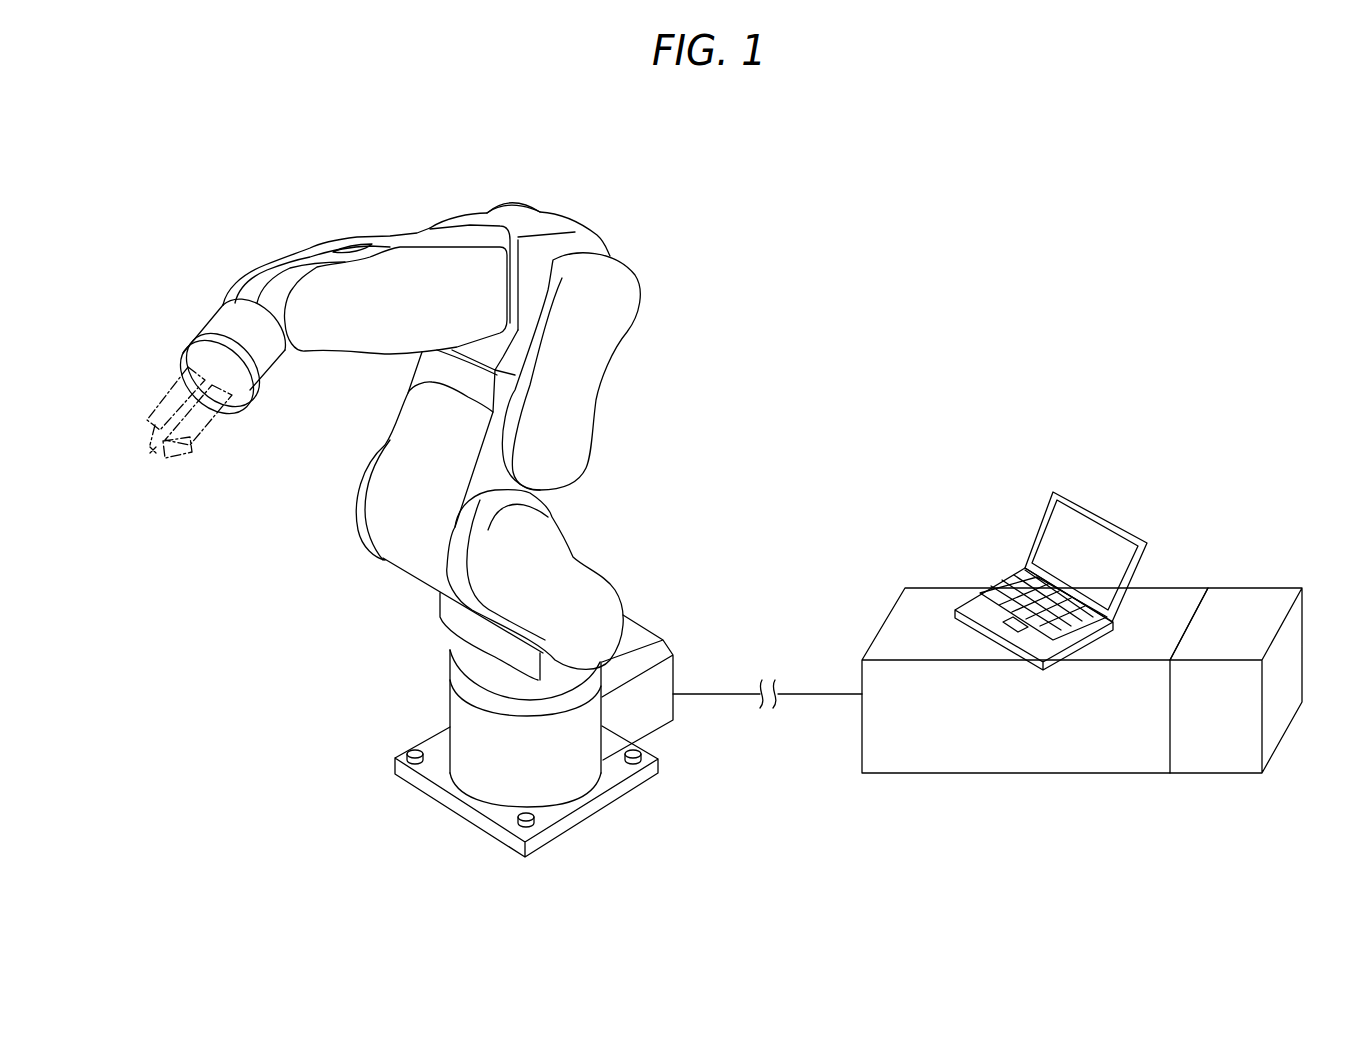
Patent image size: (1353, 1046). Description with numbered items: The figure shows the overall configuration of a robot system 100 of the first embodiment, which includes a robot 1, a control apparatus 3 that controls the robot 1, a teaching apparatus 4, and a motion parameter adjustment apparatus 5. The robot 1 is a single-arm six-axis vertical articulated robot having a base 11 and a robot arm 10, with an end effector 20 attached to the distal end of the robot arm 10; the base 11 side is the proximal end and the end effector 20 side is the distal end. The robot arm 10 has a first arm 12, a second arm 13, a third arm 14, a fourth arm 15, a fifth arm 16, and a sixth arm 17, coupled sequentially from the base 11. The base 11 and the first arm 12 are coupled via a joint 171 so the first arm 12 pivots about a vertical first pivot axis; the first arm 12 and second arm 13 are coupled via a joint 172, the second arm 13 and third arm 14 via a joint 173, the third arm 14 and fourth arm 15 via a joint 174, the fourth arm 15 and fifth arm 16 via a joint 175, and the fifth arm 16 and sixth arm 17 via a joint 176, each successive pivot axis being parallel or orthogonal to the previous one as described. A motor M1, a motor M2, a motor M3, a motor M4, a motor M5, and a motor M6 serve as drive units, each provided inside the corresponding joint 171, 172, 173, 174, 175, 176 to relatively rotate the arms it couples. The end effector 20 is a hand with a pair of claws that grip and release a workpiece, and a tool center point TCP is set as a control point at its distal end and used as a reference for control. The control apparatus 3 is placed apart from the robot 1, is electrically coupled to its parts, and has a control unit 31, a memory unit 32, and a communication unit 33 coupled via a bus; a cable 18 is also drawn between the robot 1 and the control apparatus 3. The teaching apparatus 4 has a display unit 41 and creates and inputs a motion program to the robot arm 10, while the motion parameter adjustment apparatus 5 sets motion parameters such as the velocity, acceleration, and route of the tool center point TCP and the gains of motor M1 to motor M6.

The robot system 100 is at (1226, 195).
The robot 1 is at (712, 194).
The robot arm 10 is at (636, 265).
The base 11 is at (533, 787).
The first arm 12 is at (605, 611).
The second arm 13 is at (584, 430).
The third arm 14 is at (560, 220).
The fourth arm 15 is at (424, 262).
The fifth arm 16 is at (250, 274).
The sixth arm 17 is at (223, 323).
The cable 18 is at (823, 697).
The end effector 20 is at (207, 430).
The joint 171 is at (470, 653).
The joint 172 is at (358, 506).
The joint 173 is at (587, 230).
The joint 174 is at (482, 215).
The joint 175 is at (268, 257).
The joint 176 is at (292, 335).
The motor M1 is at (583, 753).
The motor M2 is at (553, 585).
The motor M3 is at (547, 460).
The motor M4 is at (533, 270).
The motor M5 is at (402, 295).
The motor M6 is at (258, 258).
The tool center point TCP is at (153, 452).
The control apparatus 3 is at (1162, 590).
The control unit 31 is at (925, 733).
The memory unit 32 is at (993, 733).
The communication unit 33 is at (1063, 733).
The teaching apparatus 4 is at (1098, 518).
The display unit 41 is at (1063, 547).
The motion parameter adjustment apparatus 5 is at (1254, 590).